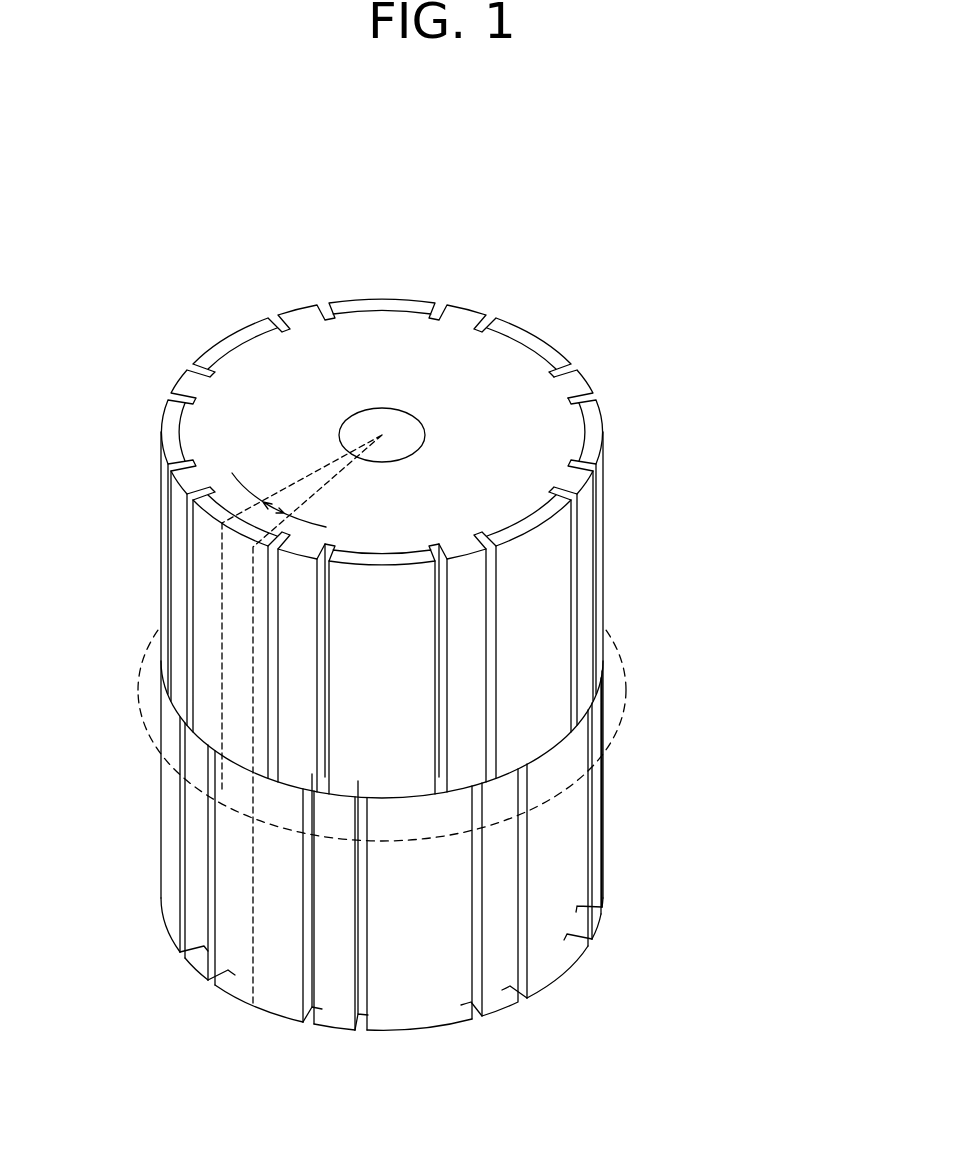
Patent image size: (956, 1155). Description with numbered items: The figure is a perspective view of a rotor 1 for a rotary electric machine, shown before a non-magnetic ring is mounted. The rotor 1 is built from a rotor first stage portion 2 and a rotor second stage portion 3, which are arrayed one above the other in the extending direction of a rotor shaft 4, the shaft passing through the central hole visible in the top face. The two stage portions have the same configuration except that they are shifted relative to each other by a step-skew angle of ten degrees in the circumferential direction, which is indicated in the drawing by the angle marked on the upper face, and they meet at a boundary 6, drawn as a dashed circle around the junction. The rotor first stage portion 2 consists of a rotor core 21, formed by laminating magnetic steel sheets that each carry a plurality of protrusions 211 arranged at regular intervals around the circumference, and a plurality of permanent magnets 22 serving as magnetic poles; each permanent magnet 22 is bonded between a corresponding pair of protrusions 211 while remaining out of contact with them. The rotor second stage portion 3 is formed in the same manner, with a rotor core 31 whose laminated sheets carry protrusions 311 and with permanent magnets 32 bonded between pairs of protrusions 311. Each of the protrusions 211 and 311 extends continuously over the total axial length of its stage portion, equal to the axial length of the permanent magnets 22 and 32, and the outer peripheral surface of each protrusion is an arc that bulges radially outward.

The rotor 1 is at (374, 1119).
The rotor first stage portion 2 is at (136, 393).
The rotor second stage portion 3 is at (136, 671).
The rotor shaft 4 is at (372, 423).
The boundary 6 is at (618, 728).
The rotor core 21 is at (408, 347).
The protrusion 211 is at (578, 387).
The permanent magnet 22 is at (550, 617).
The rotor core 31 is at (500, 978).
The protrusion 311 is at (493, 930).
The permanent magnet 32 is at (560, 866).